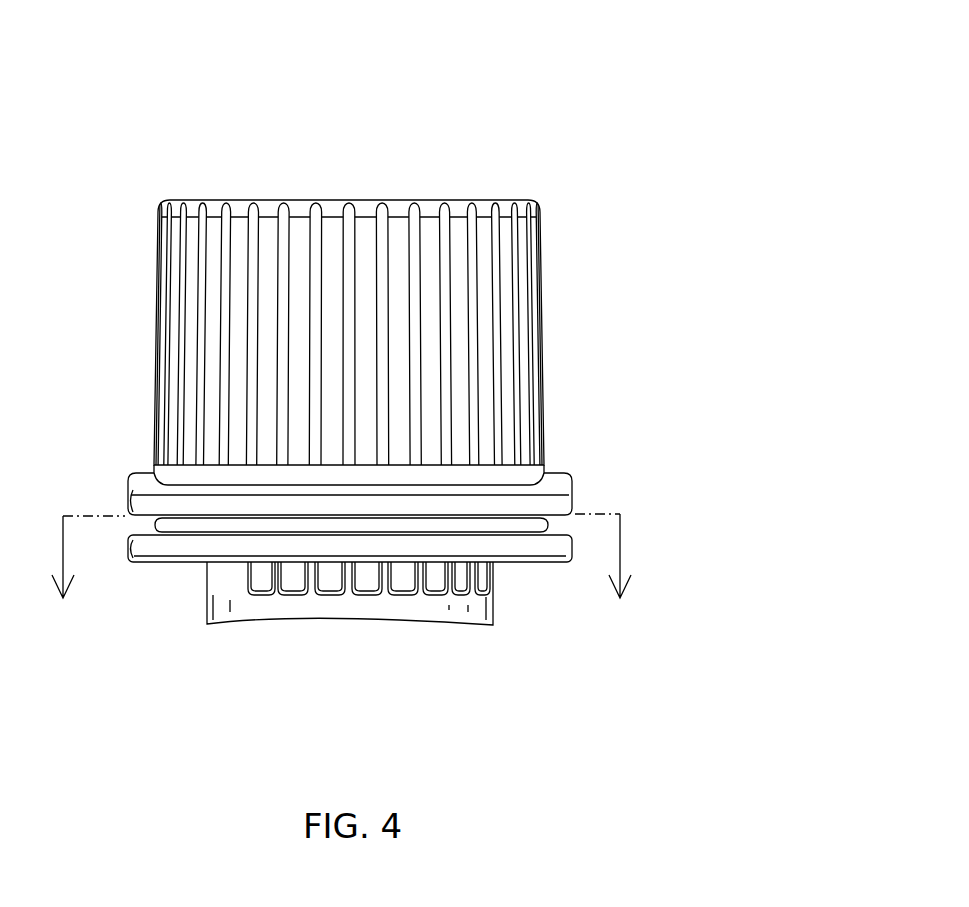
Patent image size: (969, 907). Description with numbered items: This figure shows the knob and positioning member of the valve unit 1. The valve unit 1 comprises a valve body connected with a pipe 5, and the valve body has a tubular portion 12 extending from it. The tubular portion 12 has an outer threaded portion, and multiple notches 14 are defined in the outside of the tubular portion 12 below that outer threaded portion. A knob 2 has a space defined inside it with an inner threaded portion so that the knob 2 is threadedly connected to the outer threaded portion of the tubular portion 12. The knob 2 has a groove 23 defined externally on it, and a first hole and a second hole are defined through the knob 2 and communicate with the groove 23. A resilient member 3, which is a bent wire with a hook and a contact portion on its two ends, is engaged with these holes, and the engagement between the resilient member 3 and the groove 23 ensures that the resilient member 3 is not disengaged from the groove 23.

The valve unit 1 is at (546, 135).
The knob 2 is at (155, 322).
The resilient member 3 is at (562, 521).
The pipe 5 is at (340, 581).
The tubular portion 12 is at (206, 600).
The notches 14 is at (368, 583).
The groove 23 is at (132, 525).